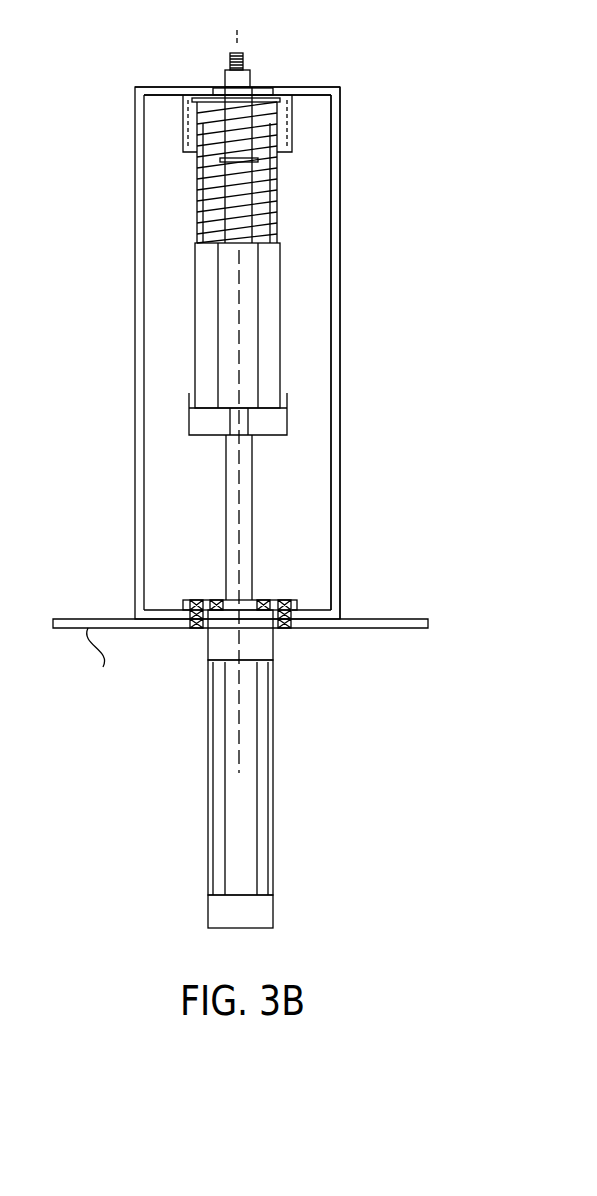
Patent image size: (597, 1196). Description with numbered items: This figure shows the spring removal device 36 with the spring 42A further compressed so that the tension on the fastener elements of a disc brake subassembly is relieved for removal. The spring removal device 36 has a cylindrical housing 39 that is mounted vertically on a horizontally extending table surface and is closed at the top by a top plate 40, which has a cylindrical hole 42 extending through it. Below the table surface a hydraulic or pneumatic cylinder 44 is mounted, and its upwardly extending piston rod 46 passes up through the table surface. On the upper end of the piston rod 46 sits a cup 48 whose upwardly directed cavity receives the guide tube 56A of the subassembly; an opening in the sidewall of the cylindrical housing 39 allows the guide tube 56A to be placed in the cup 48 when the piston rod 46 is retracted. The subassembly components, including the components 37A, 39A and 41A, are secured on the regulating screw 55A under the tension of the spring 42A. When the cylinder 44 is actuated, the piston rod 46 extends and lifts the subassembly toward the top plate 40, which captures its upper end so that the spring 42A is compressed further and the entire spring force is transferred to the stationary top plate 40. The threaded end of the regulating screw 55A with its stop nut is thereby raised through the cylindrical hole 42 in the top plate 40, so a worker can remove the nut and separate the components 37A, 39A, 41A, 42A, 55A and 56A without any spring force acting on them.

The spring removal device 36 is at (356, 434).
The subassembly component 37A is at (263, 73).
The cylindrical housing 39 is at (333, 583).
The subassembly component 39A is at (337, 94).
The top plate 40 is at (153, 87).
The subassembly component 41A is at (283, 112).
The cylindrical hole 42 is at (205, 93).
The spring 42A is at (273, 203).
The hydraulic or pneumatic cylinder 44 is at (260, 838).
The piston rod 46 is at (242, 525).
The cup 48 is at (203, 430).
The regulating screw 55A is at (247, 297).
The guide tube 56A is at (273, 333).